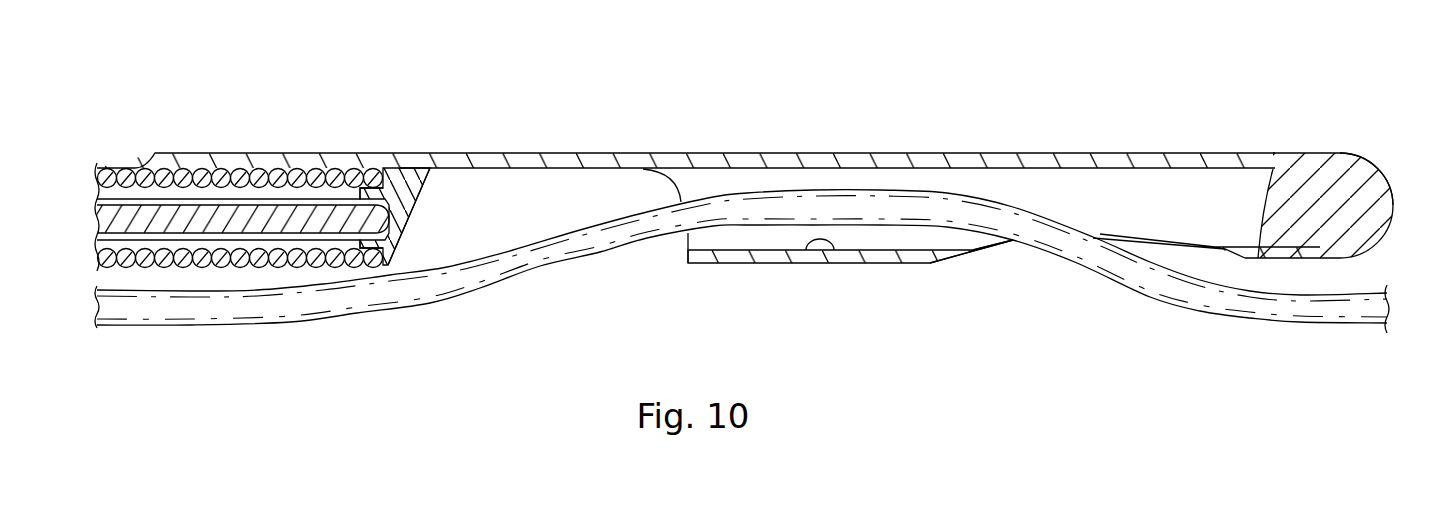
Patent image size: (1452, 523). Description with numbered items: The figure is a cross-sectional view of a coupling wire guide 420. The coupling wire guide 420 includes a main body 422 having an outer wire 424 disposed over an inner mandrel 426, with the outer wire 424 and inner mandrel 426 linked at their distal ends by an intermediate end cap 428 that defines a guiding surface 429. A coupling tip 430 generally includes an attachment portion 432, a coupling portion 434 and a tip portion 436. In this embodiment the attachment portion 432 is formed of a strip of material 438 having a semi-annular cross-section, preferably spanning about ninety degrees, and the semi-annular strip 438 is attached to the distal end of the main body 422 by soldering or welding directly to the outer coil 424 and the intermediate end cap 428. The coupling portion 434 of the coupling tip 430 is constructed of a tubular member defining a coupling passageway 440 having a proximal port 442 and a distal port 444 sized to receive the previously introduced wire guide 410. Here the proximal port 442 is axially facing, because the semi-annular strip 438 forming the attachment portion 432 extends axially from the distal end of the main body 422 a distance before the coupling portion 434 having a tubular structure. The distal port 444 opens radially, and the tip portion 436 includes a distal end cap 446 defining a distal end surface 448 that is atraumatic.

The previously introduced wire guide 410 is at (367, 303).
The coupling wire guide 420 is at (250, 51).
The main body 422 is at (177, 267).
The outer wire 424 is at (198, 170).
The inner mandrel 426 is at (238, 218).
The intermediate end cap 428 is at (411, 178).
The guiding surface 429 is at (425, 178).
The coupling tip 430 is at (610, 121).
The attachment portion 432 is at (333, 153).
The coupling portion 434 is at (848, 153).
The tip portion 436 is at (1181, 153).
The strip of material 438 is at (492, 153).
The coupling passageway 440 is at (837, 250).
The proximal port 442 is at (683, 250).
The distal port 444 is at (990, 250).
The distal end cap 446 is at (1345, 187).
The distal end surface 448 is at (1386, 165).